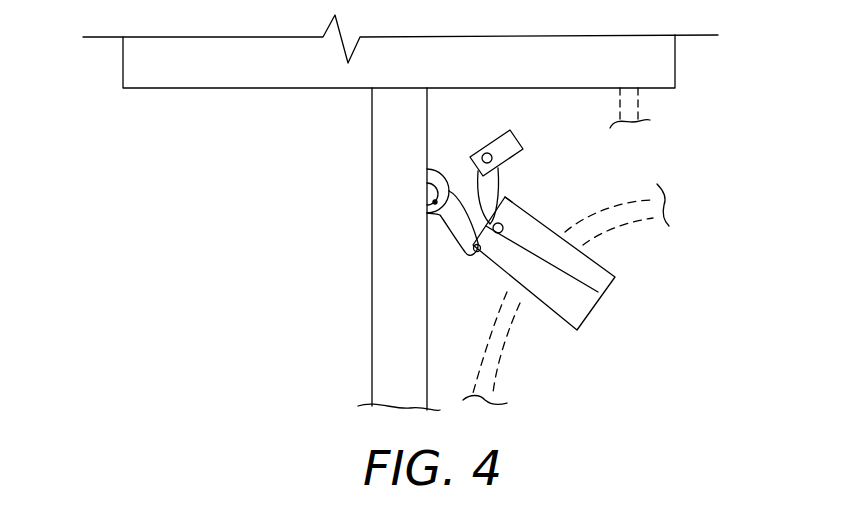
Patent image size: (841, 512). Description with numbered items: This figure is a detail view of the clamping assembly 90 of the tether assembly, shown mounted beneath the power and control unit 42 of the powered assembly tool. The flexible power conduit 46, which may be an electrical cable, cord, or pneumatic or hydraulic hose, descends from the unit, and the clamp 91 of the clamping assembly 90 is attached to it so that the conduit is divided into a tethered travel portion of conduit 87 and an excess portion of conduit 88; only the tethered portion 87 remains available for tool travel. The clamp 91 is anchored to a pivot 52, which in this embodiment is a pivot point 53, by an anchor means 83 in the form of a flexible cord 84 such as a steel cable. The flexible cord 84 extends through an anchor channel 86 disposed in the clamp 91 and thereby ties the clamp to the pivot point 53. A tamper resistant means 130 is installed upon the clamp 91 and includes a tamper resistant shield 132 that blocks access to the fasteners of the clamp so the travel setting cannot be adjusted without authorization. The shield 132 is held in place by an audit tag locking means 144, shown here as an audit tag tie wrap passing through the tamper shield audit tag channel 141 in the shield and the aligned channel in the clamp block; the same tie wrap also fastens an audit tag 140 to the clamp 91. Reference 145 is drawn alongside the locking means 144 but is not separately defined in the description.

The power and control unit 42 is at (153, 53).
The pivot 52 is at (350, 163).
The pivot point 53 is at (422, 190).
The anchor means 83 is at (437, 163).
The flexible cord 84 is at (435, 233).
The anchor channel 86 is at (477, 260).
The clamping assembly 90 is at (504, 289).
The clamp 91 is at (476, 283).
The tamper resistant means 130 is at (504, 289).
The tamper resistant shield 132 is at (587, 289).
The audit tag 140 is at (510, 140).
The tamper shield audit tag channel 141 is at (512, 200).
The audit tag locking means 144 is at (550, 184).
The link 145 is at (499, 178).
The flexible power conduit 46 is at (616, 292).
The tethered travel portion of conduit 87 is at (630, 203).
The excess portion of conduit 88 is at (497, 340).